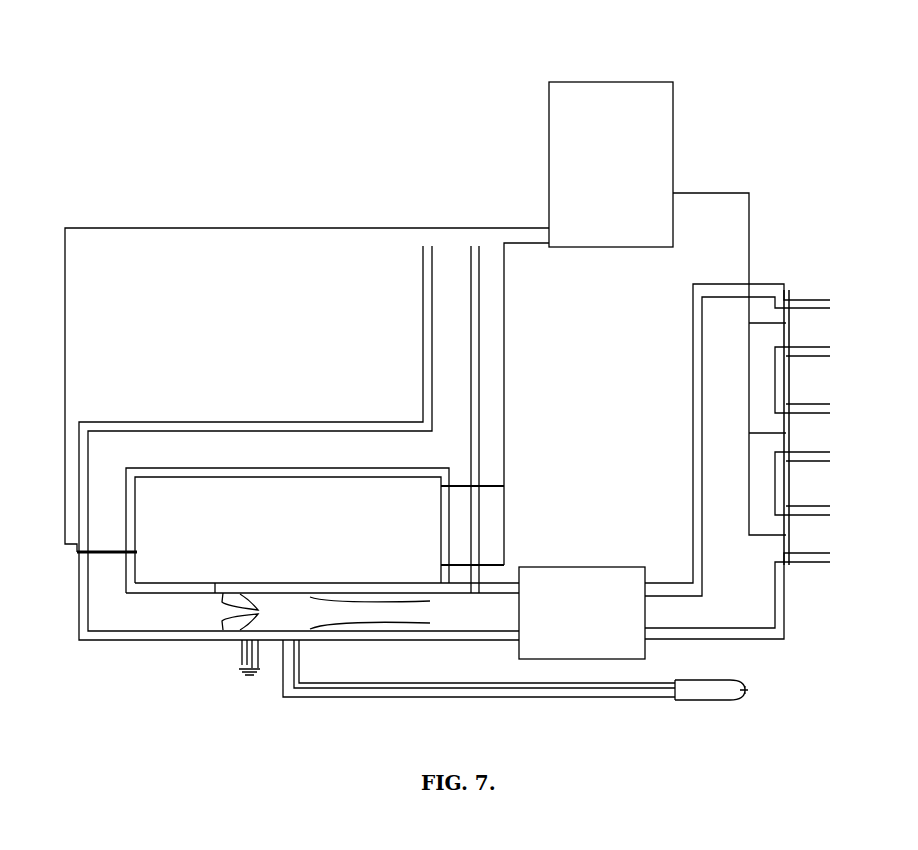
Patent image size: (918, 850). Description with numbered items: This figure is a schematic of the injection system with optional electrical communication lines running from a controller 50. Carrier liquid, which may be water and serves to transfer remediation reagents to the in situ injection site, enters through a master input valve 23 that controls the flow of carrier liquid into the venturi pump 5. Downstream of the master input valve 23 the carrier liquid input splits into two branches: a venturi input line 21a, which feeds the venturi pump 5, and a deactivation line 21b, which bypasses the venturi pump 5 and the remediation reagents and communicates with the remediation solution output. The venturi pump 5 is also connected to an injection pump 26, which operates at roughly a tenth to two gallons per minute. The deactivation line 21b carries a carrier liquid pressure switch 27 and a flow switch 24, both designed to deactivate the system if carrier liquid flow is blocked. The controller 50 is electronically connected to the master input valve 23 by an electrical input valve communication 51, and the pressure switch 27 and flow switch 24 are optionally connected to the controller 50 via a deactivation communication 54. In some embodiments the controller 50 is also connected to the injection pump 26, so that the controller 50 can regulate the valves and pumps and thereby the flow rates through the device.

The venturi pump 5 is at (268, 585).
The venturi input line 21a is at (312, 452).
The deactivation line 21b is at (462, 461).
The master input valve 23 is at (100, 552).
The flow switch 24 is at (441, 486).
The injection pump 26 is at (597, 595).
The carrier liquid pressure switch 27 is at (441, 565).
The controller 50 is at (647, 95).
The electrical input valve communication 51 is at (248, 228).
The deactivation communication 54 is at (505, 313).